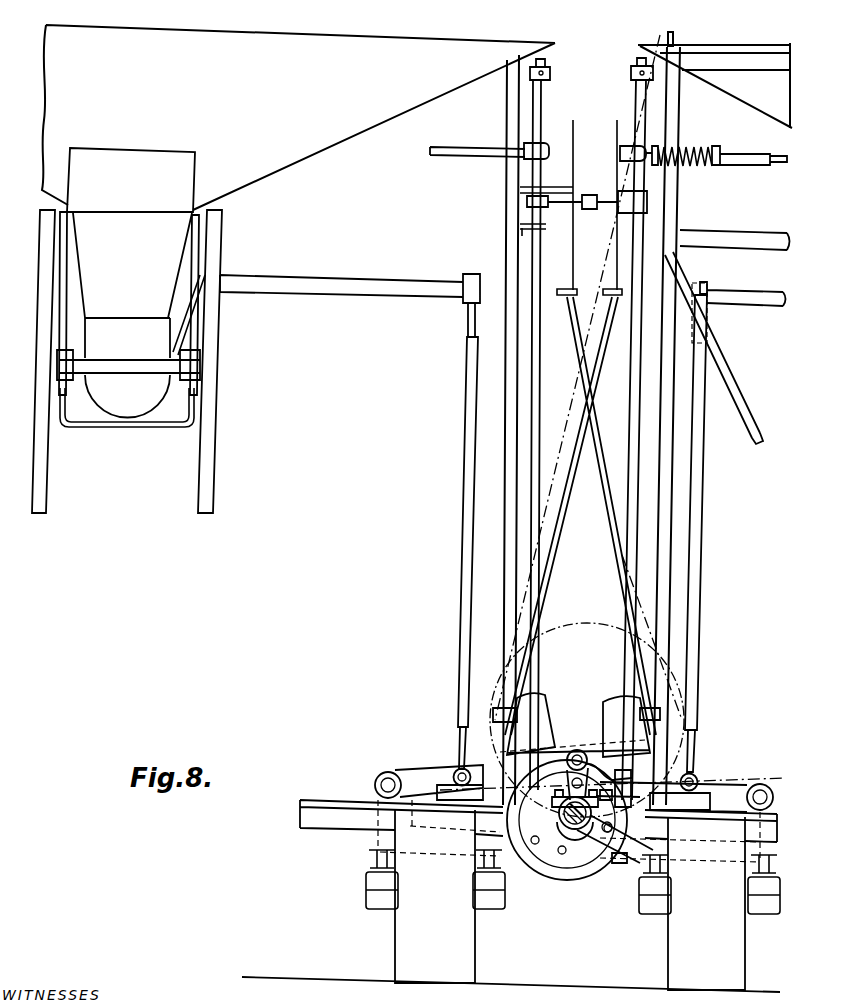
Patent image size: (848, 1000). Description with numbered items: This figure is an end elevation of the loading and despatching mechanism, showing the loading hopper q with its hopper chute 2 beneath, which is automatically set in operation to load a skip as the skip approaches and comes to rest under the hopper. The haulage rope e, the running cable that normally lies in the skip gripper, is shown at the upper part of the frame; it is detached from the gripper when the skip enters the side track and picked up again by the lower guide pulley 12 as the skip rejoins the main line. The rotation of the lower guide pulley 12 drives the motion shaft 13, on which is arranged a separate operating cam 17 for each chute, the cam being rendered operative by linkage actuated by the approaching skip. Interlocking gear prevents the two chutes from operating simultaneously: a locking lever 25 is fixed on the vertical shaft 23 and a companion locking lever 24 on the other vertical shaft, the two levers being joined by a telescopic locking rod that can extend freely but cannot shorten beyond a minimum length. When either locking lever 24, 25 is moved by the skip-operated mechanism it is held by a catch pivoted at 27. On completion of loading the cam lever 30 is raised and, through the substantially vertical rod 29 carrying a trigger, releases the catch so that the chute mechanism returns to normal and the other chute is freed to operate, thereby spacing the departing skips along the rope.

The loading hopper q is at (298, 118).
The hopper chute 2 is at (127, 361).
The haulage rope e is at (647, 64).
The locking lever 25 is at (564, 214).
The locking lever 24 is at (607, 203).
The vertical rod 29 is at (607, 488).
The vertical shaft 23 is at (527, 517).
The catch pivot 27 is at (628, 555).
The lower guide pulley 12 is at (560, 625).
The cam lever 30 is at (428, 775).
The operating cam 17 is at (552, 845).
The motion shaft 13 is at (573, 822).